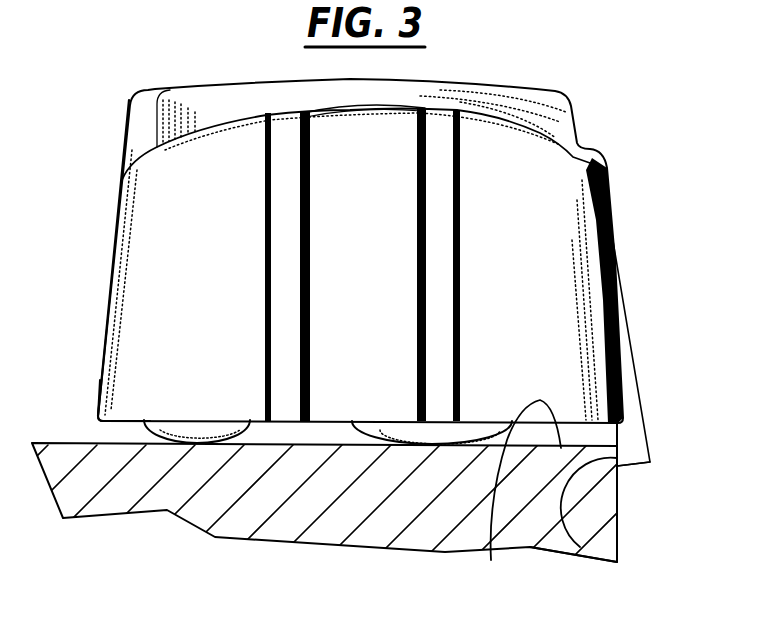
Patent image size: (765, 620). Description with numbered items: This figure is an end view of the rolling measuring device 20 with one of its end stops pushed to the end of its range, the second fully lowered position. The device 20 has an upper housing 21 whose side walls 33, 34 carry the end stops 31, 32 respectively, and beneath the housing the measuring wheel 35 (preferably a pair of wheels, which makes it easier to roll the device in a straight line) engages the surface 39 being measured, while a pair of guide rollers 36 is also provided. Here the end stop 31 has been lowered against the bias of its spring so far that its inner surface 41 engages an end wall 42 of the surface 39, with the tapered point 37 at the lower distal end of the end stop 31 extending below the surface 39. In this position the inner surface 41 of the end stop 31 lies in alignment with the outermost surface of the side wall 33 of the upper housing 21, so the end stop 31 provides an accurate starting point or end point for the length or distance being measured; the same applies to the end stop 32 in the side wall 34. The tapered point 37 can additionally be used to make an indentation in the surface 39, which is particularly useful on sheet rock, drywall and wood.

The measuring device 20 is at (233, 48).
The upper housing 21 is at (508, 83).
The end stop 31 is at (623, 310).
The end stop 32 is at (123, 143).
The side wall 33 is at (623, 378).
The side wall 34 is at (100, 390).
The measuring wheel 35 is at (403, 430).
The guide rollers 36 is at (193, 428).
The tapered point 37 is at (637, 465).
The surface 39 is at (491, 560).
The inner surface 41 is at (583, 553).
The end wall 42 is at (612, 532).